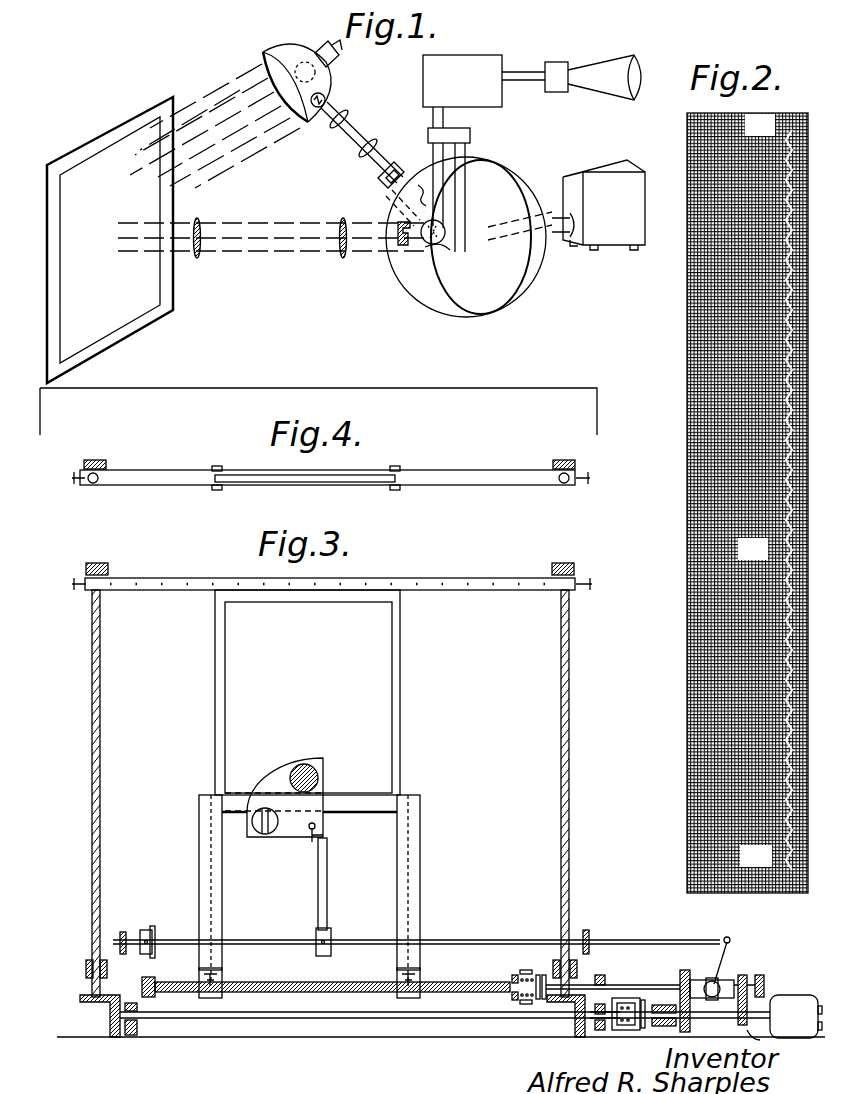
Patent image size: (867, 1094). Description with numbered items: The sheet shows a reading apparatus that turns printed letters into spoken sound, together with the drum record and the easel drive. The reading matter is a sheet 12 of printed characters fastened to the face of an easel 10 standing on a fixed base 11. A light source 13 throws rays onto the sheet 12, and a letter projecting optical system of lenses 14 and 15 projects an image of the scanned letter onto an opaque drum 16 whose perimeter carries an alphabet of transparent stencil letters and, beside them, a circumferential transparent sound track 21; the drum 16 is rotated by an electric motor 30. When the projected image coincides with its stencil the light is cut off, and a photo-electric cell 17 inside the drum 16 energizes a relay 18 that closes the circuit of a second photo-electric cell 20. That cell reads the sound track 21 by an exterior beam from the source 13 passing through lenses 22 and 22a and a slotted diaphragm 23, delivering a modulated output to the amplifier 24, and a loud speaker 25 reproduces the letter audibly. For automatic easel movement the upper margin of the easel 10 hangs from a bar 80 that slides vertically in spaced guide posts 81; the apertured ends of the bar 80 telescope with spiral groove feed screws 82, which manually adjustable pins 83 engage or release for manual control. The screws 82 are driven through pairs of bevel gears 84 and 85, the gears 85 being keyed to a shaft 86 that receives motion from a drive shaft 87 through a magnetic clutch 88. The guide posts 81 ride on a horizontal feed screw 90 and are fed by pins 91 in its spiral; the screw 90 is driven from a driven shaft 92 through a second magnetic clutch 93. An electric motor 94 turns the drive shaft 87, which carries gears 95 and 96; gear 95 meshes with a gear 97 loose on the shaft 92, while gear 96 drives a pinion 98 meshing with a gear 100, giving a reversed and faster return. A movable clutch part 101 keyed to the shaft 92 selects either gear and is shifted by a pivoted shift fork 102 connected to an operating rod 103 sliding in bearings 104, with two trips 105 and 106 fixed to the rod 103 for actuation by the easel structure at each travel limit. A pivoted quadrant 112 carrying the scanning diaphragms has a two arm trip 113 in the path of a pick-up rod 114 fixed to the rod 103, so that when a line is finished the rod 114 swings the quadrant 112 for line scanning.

In FIG. 1, the easel 10 is at (173, 312).
In FIG. 4, the easel 10 is at (240, 485).
In FIG. 3, the easel 10 is at (400, 718).
In FIG. 1, the fixed base 11 is at (125, 397).
In FIG. 1, the sheet 12 is at (50, 355).
In FIG. 3, the sheet 12 is at (370, 662).
In FIG. 1, the light source 13 is at (282, 48).
In FIG. 1, the lens 14 is at (197, 258).
In FIG. 1, the lens 15 is at (343, 258).
In FIG. 1, the drum 16 is at (420, 290).
In FIG. 2, the drum 16 is at (687, 308).
In FIG. 1, the photo-electric cell 17 is at (448, 255).
In FIG. 1, the relay 18 is at (428, 134).
In FIG. 1, the photo-electric cell 20 is at (428, 240).
In FIG. 1, the sound track 21 is at (418, 186).
In FIG. 2, the sound track 21 is at (756, 490).
In FIG. 1, the lens 22 is at (338, 120).
In FIG. 1, the lens 22a is at (365, 152).
In FIG. 1, the slotted diaphragm 23 is at (382, 186).
In FIG. 1, the amplifier 24 is at (423, 80).
In FIG. 1, the loud speaker 25 is at (557, 92).
In FIG. 1, the electric motor 30 is at (604, 205).
In FIG. 4, the bar 80 is at (440, 472).
In FIG. 3, the bar 80 is at (440, 580).
In FIG. 3, the guide posts 81 is at (440, 868).
In FIG. 4, the feed screws 82 is at (544, 510).
In FIG. 3, the feed screws 82 is at (585, 665).
In FIG. 4, the adjustable pins 83 is at (605, 486).
In FIG. 3, the adjustable pins 83 is at (592, 584).
In FIG. 3, the bevel gears 84 is at (530, 1045).
In FIG. 3, the bevel gears 85 is at (570, 1045).
In FIG. 3, the shaft 86 is at (275, 1018).
In FIG. 3, the drive shaft 87 is at (712, 1018).
In FIG. 3, the clutch 88 is at (625, 1030).
In FIG. 3, the feed screw 90 is at (358, 992).
In FIG. 3, the pins 91 is at (436, 970).
In FIG. 3, the driven shaft 92 is at (630, 985).
In FIG. 3, the magnetic clutch 93 is at (522, 970).
In FIG. 3, the electric motor 94 is at (782, 995).
In FIG. 3, the gear 95 is at (662, 1027).
In FIG. 3, the gear 96 is at (739, 1044).
In FIG. 3, the gear 97 is at (684, 970).
In FIG. 3, the pinion 98 is at (762, 975).
In FIG. 3, the gear 100 is at (746, 975).
In FIG. 3, the movable clutch part 101 is at (716, 980).
In FIG. 3, the shift fork 102 is at (716, 955).
In FIG. 3, the operating rod 103 is at (618, 940).
In FIG. 3, the bearings 104 is at (590, 900).
In FIG. 3, the trip 105 is at (152, 930).
In FIG. 3, the trip 106 is at (331, 936).
In FIG. 3, the quadrant 112 is at (287, 825).
In FIG. 3, the two arm trip 113 is at (323, 830).
In FIG. 3, the pick-up rod 114 is at (327, 866).